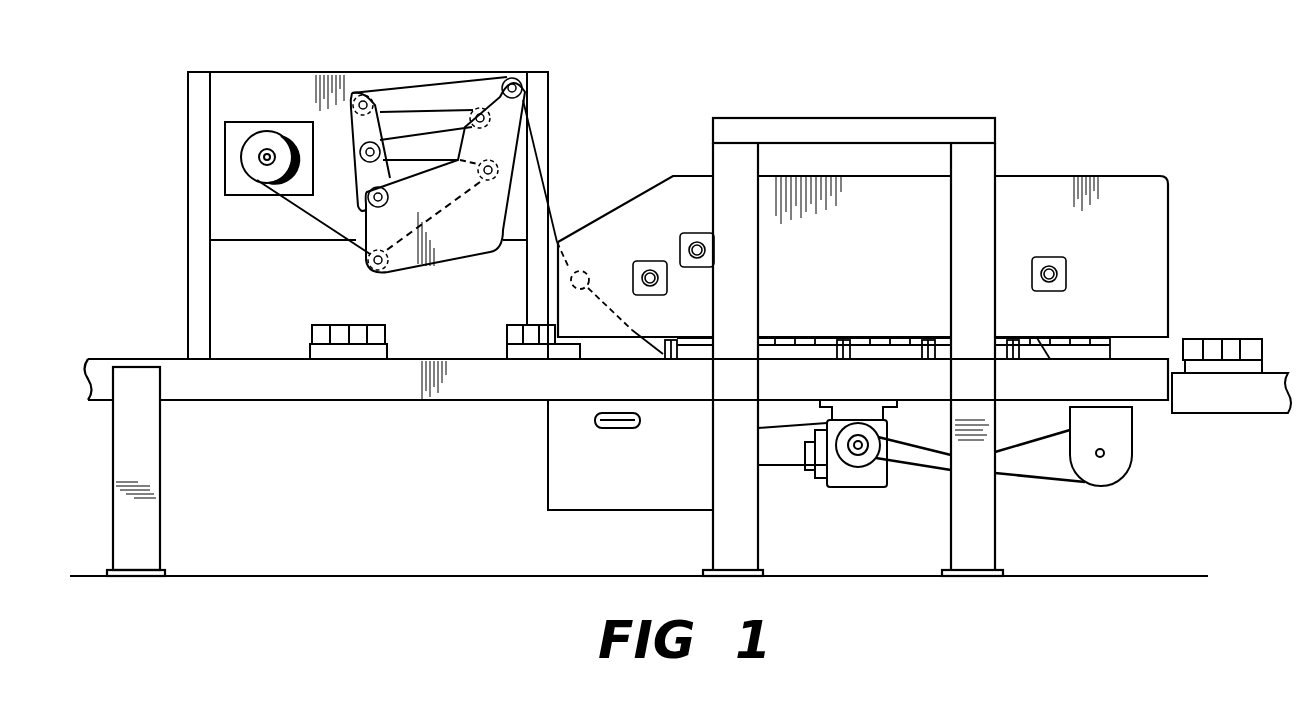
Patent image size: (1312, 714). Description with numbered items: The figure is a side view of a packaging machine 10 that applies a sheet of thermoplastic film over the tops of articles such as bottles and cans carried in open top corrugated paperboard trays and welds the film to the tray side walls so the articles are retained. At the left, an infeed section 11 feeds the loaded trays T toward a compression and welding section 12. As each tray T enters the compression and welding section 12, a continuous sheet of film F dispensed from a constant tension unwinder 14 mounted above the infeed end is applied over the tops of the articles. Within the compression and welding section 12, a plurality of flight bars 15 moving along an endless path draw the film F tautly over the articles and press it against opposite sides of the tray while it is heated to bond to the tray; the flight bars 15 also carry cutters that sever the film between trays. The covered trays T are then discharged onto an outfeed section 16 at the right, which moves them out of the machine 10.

The packaging machine 10 is at (624, 126).
The infeed section 11 is at (364, 396).
The compression and welding section 12 is at (1041, 182).
The constant tension unwinder 14 is at (448, 60).
The flight bars 15 is at (667, 347).
The outfeed section 16 is at (1222, 409).
The sheet of film F is at (557, 213).
The trays T is at (384, 353).